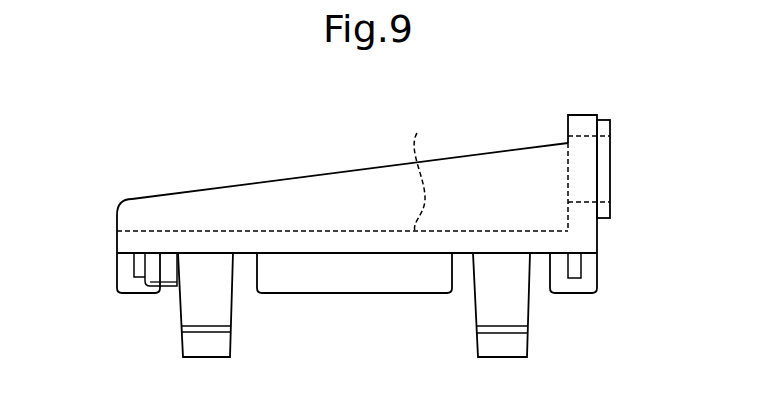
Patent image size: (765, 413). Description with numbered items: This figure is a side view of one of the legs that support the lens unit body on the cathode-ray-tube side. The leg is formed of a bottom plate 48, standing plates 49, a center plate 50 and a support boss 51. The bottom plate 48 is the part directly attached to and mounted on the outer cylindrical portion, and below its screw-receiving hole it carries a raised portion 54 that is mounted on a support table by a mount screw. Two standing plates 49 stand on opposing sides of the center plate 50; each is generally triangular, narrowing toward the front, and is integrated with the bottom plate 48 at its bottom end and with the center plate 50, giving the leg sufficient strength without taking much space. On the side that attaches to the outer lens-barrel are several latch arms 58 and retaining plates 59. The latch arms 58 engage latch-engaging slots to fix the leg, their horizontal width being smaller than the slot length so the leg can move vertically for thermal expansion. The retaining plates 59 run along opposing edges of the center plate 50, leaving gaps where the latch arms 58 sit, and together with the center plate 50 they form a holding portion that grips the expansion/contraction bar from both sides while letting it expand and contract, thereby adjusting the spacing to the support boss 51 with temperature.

The bottom plate 48 is at (586, 113).
The standing plate 49 is at (353, 170).
The center plate 50 is at (421, 168).
The support boss 51 is at (168, 286).
The raised portion 54 is at (610, 155).
The latch arm 58 is at (231, 347).
The retaining plate 59 is at (128, 297).